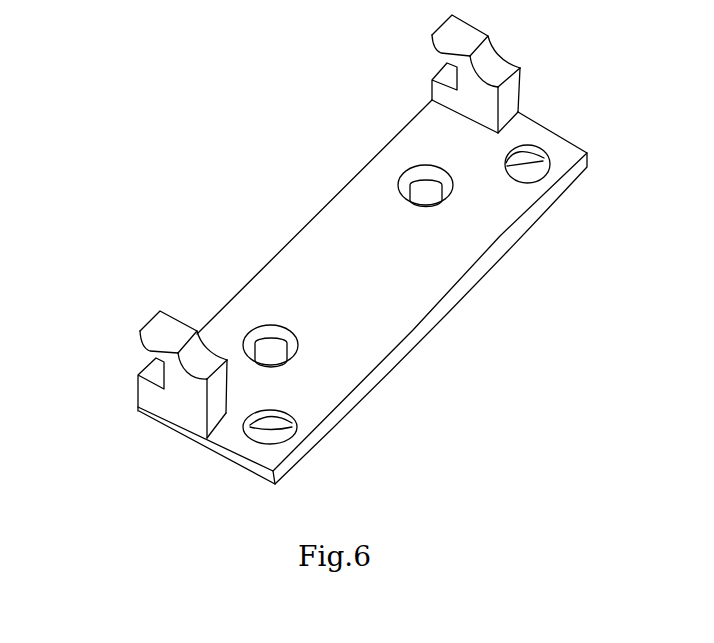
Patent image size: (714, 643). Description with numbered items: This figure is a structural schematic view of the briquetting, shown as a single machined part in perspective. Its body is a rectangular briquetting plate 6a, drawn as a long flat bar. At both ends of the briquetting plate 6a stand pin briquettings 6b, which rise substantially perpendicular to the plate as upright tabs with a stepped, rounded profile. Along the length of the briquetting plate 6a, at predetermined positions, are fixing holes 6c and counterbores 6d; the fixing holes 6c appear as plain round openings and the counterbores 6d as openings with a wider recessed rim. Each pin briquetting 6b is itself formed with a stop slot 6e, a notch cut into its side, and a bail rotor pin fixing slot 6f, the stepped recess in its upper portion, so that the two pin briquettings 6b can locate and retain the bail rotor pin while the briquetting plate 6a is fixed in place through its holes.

The briquetting plate 6a is at (413, 282).
The pin briquetting 6b is at (512, 100).
The fixing hole 6c is at (289, 355).
The counterbore 6d is at (531, 152).
The stop slot 6e is at (155, 377).
The bail rotor pin fixing slot 6f is at (203, 360).